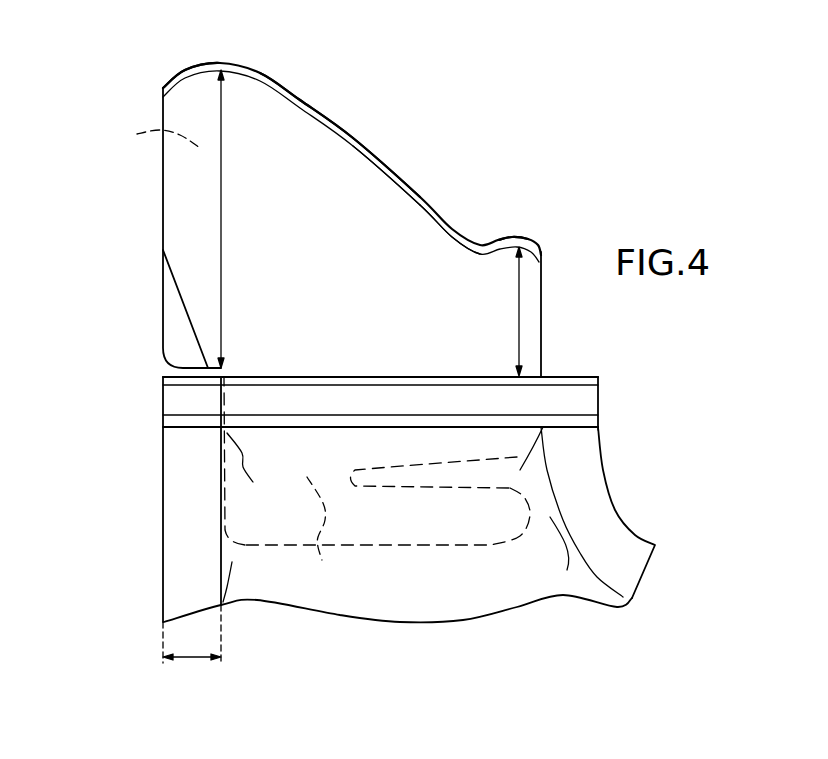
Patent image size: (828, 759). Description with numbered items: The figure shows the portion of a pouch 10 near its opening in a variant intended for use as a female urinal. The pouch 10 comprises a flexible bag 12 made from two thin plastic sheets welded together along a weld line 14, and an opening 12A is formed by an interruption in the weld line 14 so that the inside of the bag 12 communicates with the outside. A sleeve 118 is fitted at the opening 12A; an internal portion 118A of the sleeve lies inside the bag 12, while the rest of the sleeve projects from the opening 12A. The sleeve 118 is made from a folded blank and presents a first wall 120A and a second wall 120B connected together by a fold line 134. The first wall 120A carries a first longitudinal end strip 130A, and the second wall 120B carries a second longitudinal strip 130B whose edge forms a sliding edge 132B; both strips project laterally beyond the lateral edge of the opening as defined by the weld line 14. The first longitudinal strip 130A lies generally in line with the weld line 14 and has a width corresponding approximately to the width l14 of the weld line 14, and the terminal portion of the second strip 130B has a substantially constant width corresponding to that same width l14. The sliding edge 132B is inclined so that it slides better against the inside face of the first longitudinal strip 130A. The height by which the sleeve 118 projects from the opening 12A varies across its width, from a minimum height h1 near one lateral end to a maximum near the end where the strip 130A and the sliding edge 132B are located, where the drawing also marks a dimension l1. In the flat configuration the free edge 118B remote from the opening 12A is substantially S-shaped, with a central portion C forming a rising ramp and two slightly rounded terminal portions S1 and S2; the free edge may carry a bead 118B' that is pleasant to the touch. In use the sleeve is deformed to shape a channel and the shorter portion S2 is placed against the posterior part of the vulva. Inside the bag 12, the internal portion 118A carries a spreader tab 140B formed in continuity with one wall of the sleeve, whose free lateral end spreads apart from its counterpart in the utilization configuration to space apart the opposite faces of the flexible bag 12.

The pouch 10 is at (628, 497).
The flexible bag 12 is at (400, 613).
The opening 12A is at (362, 376).
The weld line 14 is at (176, 508).
The sleeve 118 is at (108, 198).
The internal portion of the sleeve 118A is at (325, 534).
The free edge of the sleeve 118B is at (339, 102).
The bead 118B' is at (292, 67).
The first wall 120A is at (413, 245).
The second wall 120B is at (353, 187).
The first longitudinal end strip 130A is at (144, 133).
The second longitudinal strip 130B is at (179, 82).
The sliding edge 132B is at (174, 305).
The fold line 134 is at (543, 316).
The spreader tab 140B is at (470, 525).
The central portion C is at (357, 134).
The terminal portion S1 is at (198, 62).
The terminal portion S2 is at (531, 241).
The minimum height h1 is at (506, 311).
The length l1 is at (233, 219).
The width of the line of welding l14 is at (192, 634).